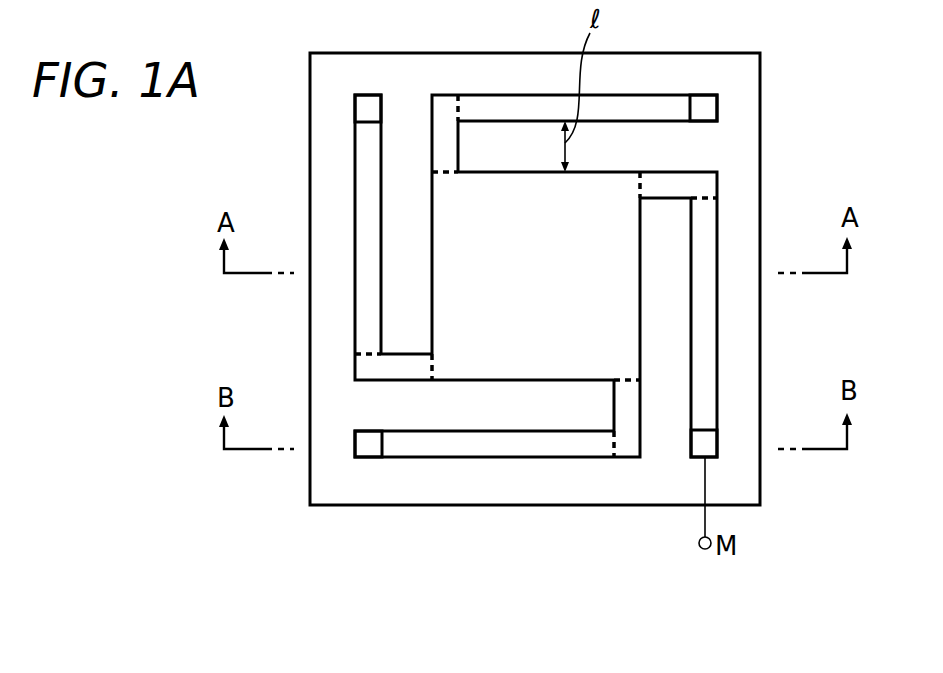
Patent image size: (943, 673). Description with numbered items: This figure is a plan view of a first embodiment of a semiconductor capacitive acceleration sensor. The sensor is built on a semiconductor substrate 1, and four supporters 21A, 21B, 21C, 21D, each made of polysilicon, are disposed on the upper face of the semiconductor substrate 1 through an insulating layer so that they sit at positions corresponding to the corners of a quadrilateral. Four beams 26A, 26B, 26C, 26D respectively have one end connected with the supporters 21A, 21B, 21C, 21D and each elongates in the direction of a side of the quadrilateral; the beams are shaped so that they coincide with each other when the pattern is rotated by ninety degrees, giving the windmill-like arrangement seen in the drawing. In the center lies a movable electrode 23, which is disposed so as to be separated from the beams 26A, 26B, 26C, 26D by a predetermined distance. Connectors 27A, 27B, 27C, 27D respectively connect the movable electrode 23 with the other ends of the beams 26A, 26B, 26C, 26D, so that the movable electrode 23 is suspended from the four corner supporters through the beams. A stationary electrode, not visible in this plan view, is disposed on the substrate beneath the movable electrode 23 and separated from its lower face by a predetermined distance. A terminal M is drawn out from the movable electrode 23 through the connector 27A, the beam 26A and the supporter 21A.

The semiconductor substrate 1 is at (548, 506).
The movable electrode 23 is at (600, 198).
The supporter 21A is at (720, 440).
The supporter 21B is at (707, 103).
The supporter 21C is at (370, 93).
The supporter 21D is at (365, 458).
The beam 26A is at (718, 217).
The beam 26B is at (525, 108).
The beam 26C is at (355, 185).
The beam 26D is at (452, 458).
The connector 27A is at (700, 186).
The connector 27B is at (445, 115).
The connector 27C is at (405, 360).
The connector 27D is at (634, 417).